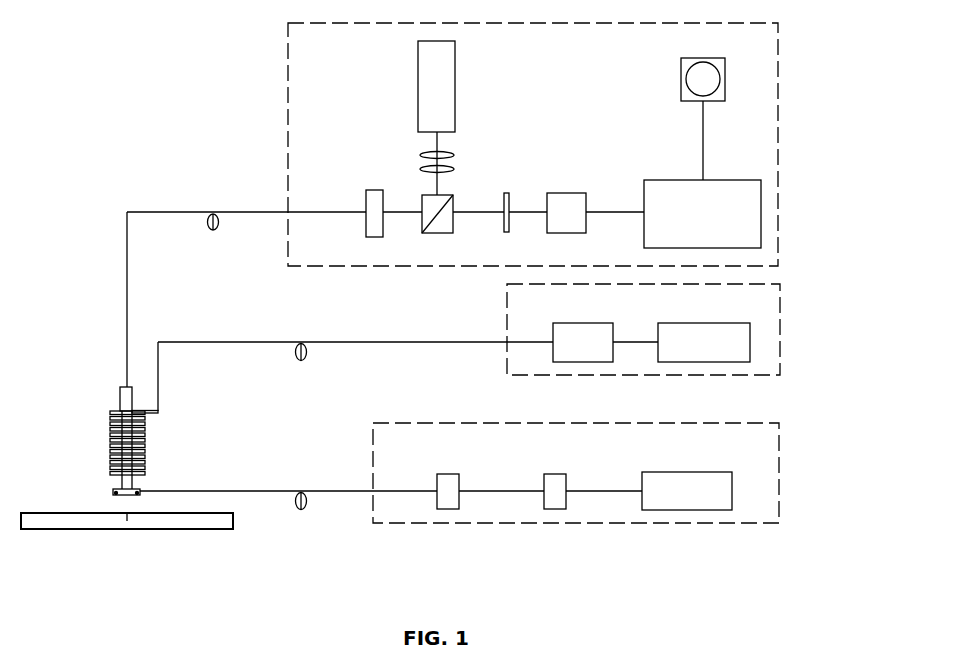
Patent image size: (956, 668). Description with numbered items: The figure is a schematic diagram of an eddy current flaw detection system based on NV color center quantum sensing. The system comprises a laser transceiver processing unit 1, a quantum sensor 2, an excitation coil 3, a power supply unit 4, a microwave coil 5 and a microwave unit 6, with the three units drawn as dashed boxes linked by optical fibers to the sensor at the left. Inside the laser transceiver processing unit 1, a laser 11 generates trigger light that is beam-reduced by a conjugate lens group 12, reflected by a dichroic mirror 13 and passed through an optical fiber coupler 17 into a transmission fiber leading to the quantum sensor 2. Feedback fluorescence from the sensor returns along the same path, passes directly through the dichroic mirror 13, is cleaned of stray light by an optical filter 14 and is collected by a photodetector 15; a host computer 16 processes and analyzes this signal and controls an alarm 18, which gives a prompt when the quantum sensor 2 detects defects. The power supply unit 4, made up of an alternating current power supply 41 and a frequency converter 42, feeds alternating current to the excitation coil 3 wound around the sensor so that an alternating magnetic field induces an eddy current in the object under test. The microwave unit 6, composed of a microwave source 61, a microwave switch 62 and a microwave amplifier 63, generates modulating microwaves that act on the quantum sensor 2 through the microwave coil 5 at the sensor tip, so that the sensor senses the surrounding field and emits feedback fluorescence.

The laser transceiver processing unit 1 is at (797, 97).
The laser 11 is at (425, 88).
The conjugate lens group 12 is at (422, 169).
The dichroic mirror 13 is at (453, 207).
The optical filter 14 is at (507, 193).
The photodetector 15 is at (567, 193).
The host computer 16 is at (663, 180).
The optical fiber coupler 17 is at (365, 195).
The alarm 18 is at (681, 79).
The quantum sensor 2 is at (122, 400).
The excitation coil 3 is at (109, 430).
The power supply unit 4 is at (795, 317).
The alternating current power supply 41 is at (707, 323).
The frequency converter 42 is at (580, 323).
The microwave coil 5 is at (113, 493).
The microwave unit 6 is at (797, 478).
The microwave source 61 is at (708, 472).
The microwave switch 62 is at (553, 474).
The microwave amplifier 63 is at (447, 474).